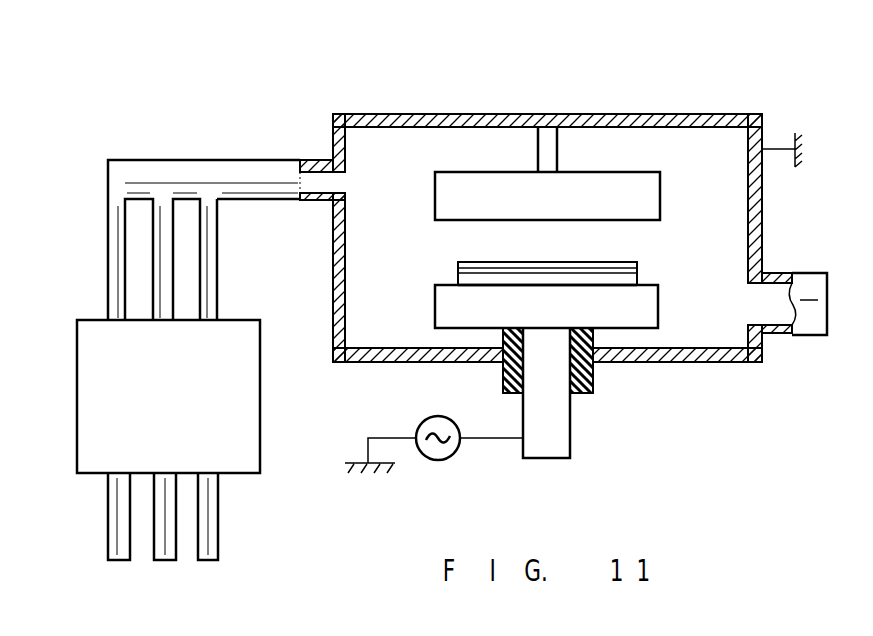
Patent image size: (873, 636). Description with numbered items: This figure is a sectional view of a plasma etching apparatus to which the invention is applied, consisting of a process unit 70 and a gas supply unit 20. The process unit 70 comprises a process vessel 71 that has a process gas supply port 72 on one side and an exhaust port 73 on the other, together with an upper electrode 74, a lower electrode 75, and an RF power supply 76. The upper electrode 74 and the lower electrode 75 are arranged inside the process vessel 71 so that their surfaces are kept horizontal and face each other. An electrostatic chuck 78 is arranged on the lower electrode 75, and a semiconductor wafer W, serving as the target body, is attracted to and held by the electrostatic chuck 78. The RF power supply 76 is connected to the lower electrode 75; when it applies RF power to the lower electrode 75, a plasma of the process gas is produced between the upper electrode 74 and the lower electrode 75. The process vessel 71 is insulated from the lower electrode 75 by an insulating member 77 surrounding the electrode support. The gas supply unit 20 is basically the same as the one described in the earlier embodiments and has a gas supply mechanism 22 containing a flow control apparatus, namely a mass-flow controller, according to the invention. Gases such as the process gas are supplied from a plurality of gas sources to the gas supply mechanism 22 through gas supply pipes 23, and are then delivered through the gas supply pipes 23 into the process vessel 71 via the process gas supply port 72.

The gas supply unit 20 is at (176, 104).
The gas supply mechanism 22 is at (77, 388).
The gas supply pipes 23 is at (108, 239).
The process unit 70 is at (551, 194).
The process vessel 71 is at (683, 115).
The process gas supply port 72 is at (317, 186).
The exhaust port 73 is at (774, 290).
The upper electrode 74 is at (468, 188).
The lower electrode 75 is at (648, 316).
The RF power supply 76 is at (441, 461).
The insulating member 77 is at (593, 368).
The electrostatic chuck 78 is at (465, 288).
The semiconductor wafer W is at (458, 266).